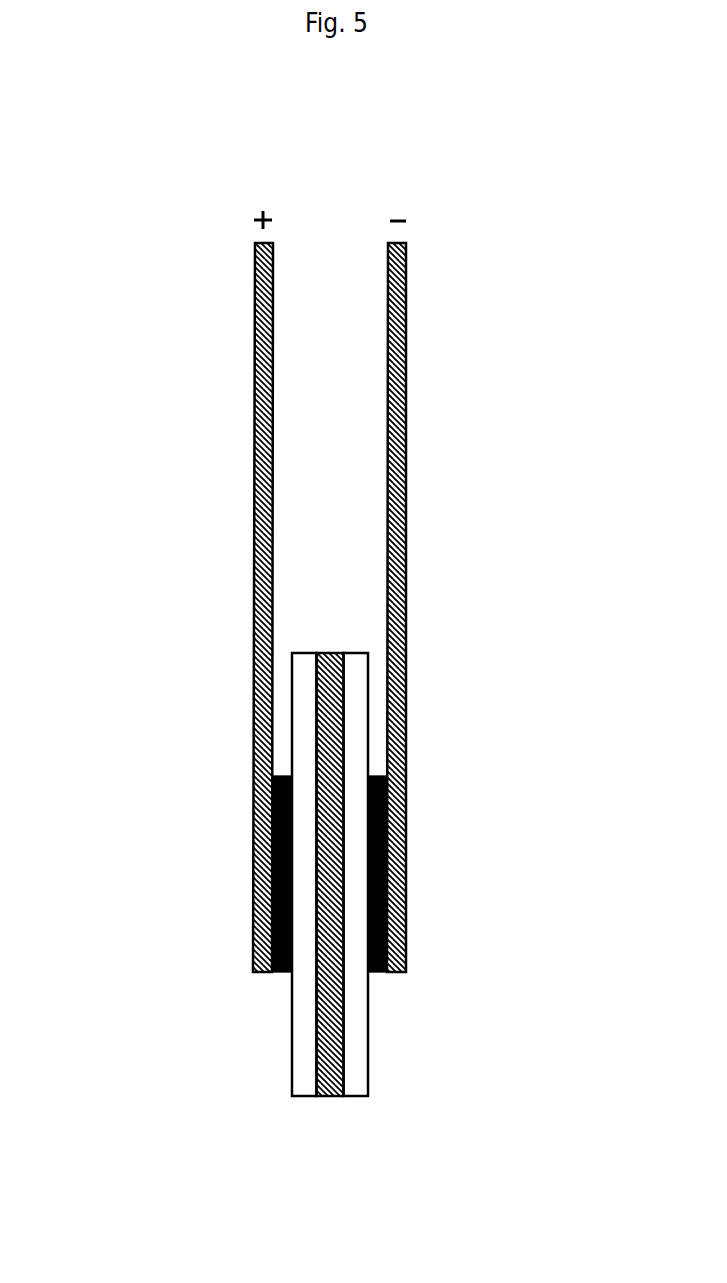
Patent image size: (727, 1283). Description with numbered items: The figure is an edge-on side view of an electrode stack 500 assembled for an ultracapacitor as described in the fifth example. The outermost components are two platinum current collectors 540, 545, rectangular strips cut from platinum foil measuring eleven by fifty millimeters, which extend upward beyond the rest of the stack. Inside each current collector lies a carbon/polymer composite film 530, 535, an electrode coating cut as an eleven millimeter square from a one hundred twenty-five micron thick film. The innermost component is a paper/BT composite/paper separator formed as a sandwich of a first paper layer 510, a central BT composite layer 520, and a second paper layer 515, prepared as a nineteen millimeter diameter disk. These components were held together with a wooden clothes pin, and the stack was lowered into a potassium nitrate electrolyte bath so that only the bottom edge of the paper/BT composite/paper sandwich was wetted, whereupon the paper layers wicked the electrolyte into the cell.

The electrode stack 500 is at (122, 190).
The paper layer of the separator 510 is at (290, 1123).
The paper layer of the separator 515 is at (368, 1123).
The BT composite layer of the separator 520 is at (328, 1126).
The carbon/polymer composite film 530 is at (268, 992).
The carbon/polymer composite film 535 is at (383, 992).
The platinum current collector 540 is at (218, 645).
The platinum current collector 545 is at (442, 642).